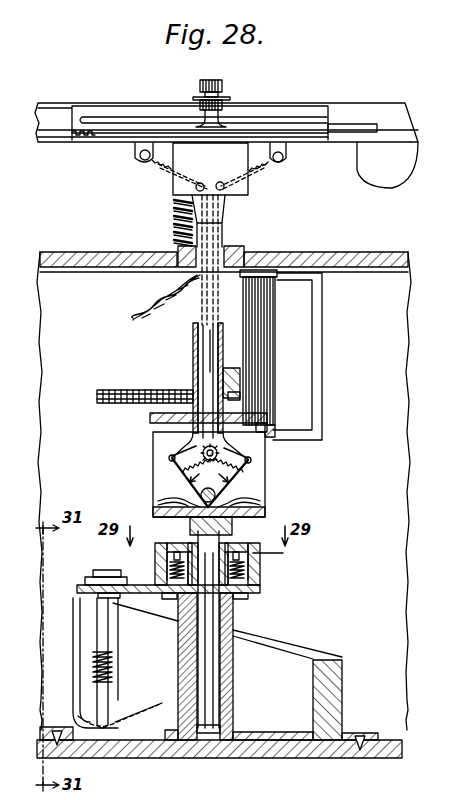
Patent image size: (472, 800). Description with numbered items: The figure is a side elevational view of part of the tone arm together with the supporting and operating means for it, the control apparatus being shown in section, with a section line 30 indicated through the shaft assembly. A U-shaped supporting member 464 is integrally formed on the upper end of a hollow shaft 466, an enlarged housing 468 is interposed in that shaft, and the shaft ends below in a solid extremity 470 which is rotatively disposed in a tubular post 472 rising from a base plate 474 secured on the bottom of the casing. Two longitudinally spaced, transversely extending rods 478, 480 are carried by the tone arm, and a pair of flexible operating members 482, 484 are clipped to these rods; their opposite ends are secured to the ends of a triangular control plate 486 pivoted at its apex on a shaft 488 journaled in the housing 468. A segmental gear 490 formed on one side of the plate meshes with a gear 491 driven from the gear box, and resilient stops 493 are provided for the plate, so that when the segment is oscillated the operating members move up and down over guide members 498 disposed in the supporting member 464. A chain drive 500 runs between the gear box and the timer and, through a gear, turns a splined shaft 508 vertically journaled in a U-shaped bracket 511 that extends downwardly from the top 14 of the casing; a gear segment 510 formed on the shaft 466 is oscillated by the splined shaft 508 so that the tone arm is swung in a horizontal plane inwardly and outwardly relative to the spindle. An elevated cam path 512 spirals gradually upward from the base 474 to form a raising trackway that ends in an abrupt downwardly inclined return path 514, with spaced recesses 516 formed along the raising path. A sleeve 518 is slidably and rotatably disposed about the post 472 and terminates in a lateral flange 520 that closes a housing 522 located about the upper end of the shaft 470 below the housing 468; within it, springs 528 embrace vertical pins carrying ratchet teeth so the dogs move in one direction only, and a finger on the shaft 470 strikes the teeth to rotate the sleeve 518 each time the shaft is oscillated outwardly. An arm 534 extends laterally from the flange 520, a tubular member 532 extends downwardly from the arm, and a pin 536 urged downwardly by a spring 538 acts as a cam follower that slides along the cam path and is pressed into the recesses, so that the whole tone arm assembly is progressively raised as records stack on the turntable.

The top of the casing 14 is at (326, 252).
The shaft / section line 30 is at (206, 358).
The U-shaped supporting member 464 is at (228, 190).
The hollow shaft 466 is at (224, 225).
The enlarged housing 468 is at (248, 459).
The solid extremity 470 is at (212, 700).
The tubular post 472 is at (226, 620).
The base plate 474 is at (272, 746).
The rod 478 is at (284, 159).
The rod 480 is at (142, 161).
The flexible operating member 482 is at (168, 176).
The flexible operating member 484 is at (228, 184).
The triangular control plate 486 is at (236, 470).
The shaft 488 is at (216, 494).
The segmental gear 490 is at (188, 482).
The gear 491 is at (192, 452).
The resilient stops 493 is at (257, 505).
The guide members 498 is at (223, 195).
The chain drive 500 is at (115, 390).
The splined shaft 508 is at (276, 326).
The gear segment 510 is at (150, 420).
The U-shaped bracket 511 is at (318, 356).
The elevated cam path 512 is at (300, 648).
The return path 514 is at (72, 612).
The recesses 516 is at (152, 708).
The sleeve 518 is at (222, 668).
The lateral flange 520 is at (262, 588).
The housing 522 is at (262, 568).
The springs 528 is at (165, 564).
The tubular member 532 is at (108, 645).
The arm 534 is at (128, 600).
The pin 536 is at (110, 692).
The spring 538 is at (96, 664).